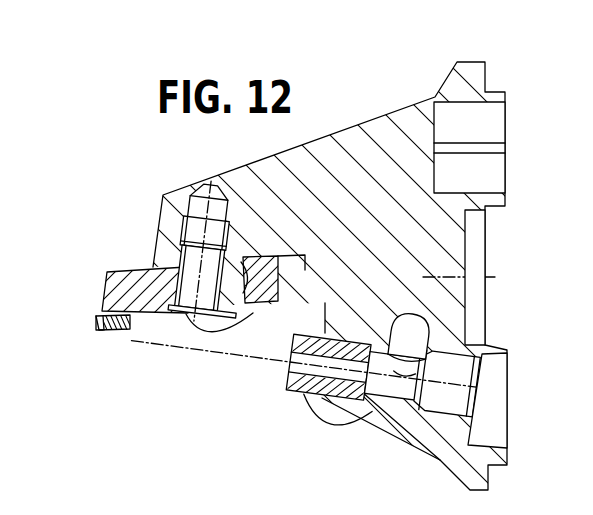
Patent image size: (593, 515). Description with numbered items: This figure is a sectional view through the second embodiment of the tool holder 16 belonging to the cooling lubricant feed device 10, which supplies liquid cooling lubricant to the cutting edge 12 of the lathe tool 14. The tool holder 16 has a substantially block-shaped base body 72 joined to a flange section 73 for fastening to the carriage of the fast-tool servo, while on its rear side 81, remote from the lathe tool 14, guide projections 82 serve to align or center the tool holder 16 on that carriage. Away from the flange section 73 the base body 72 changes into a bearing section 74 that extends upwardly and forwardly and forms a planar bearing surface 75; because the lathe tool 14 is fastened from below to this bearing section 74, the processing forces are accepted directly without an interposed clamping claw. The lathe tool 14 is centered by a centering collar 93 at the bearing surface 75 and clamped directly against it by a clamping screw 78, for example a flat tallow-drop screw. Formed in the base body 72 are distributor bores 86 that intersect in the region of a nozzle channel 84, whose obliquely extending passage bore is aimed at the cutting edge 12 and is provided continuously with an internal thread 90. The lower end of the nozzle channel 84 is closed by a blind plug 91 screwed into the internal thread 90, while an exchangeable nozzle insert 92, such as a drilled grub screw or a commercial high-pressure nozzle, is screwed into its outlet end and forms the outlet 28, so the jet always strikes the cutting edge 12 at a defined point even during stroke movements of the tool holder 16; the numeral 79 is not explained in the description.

The cooling lubricant feed device 10 is at (500, 328).
The cutting edge 12 is at (106, 335).
The lathe tool 14 is at (128, 269).
The tool holder 16 is at (440, 256).
The outlet 28 is at (292, 360).
The base body 72 is at (388, 213).
The flange section 73 is at (470, 71).
The bearing section 74 is at (177, 213).
The bearing surface 75 is at (288, 263).
The clamping screw 78 is at (227, 318).
The insert seat lip 79 is at (96, 333).
The rear side 81 is at (488, 80).
The guide projections 82 is at (499, 99).
The nozzle channel 84 is at (375, 390).
The distributor bores 86 is at (407, 333).
The internal thread 90 is at (345, 409).
The blind plug 91 is at (455, 402).
The nozzle insert 92 is at (307, 382).
The centering collar 93 is at (224, 317).